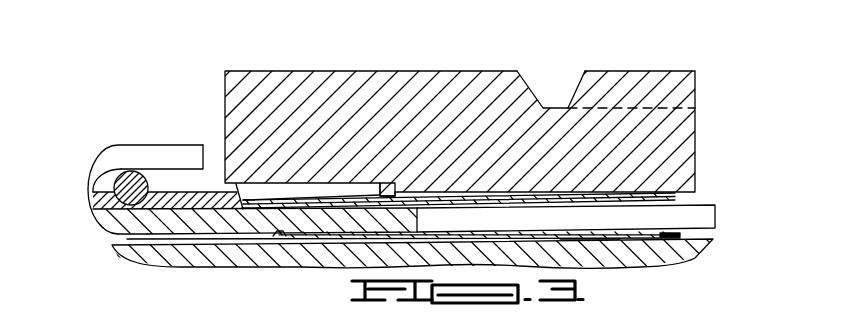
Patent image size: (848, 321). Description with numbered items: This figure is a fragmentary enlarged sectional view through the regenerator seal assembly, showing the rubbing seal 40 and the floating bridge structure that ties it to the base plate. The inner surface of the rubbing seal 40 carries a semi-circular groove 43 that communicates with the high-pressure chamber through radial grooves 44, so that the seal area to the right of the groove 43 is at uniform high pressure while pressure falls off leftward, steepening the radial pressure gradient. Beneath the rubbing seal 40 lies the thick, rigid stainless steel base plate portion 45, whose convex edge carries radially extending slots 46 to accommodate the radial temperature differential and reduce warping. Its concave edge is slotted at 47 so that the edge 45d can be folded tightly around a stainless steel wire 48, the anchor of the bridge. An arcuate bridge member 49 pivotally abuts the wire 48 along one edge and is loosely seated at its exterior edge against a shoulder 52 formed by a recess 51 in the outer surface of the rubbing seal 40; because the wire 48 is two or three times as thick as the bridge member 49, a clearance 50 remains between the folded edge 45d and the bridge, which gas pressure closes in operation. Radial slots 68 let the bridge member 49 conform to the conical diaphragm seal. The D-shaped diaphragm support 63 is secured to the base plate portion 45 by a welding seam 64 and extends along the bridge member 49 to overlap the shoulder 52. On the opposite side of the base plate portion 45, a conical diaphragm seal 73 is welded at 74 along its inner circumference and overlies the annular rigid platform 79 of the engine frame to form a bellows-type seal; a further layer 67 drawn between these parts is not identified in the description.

The rubbing seal 40 is at (392, 72).
The semi-circular groove 43 is at (543, 87).
The radial grooves 44 is at (690, 93).
The base plate portion 45 is at (367, 223).
The folded slotted edge 45d is at (180, 145).
The slots 46 is at (678, 215).
The slot 47 is at (127, 157).
The stainless steel wire 48 is at (125, 182).
The arcuate bridge member 49 is at (235, 172).
The clearance 50 is at (156, 170).
The recess 51 is at (247, 182).
The shoulder 52 is at (413, 180).
The diaphragm support 63 is at (317, 187).
The welding seam 64 is at (107, 223).
The layer 67 is at (230, 204).
The slots 68 is at (279, 193).
The diaphragm seal 73 is at (566, 262).
The weld 74 is at (283, 240).
The annular rigid platform 79 is at (133, 257).